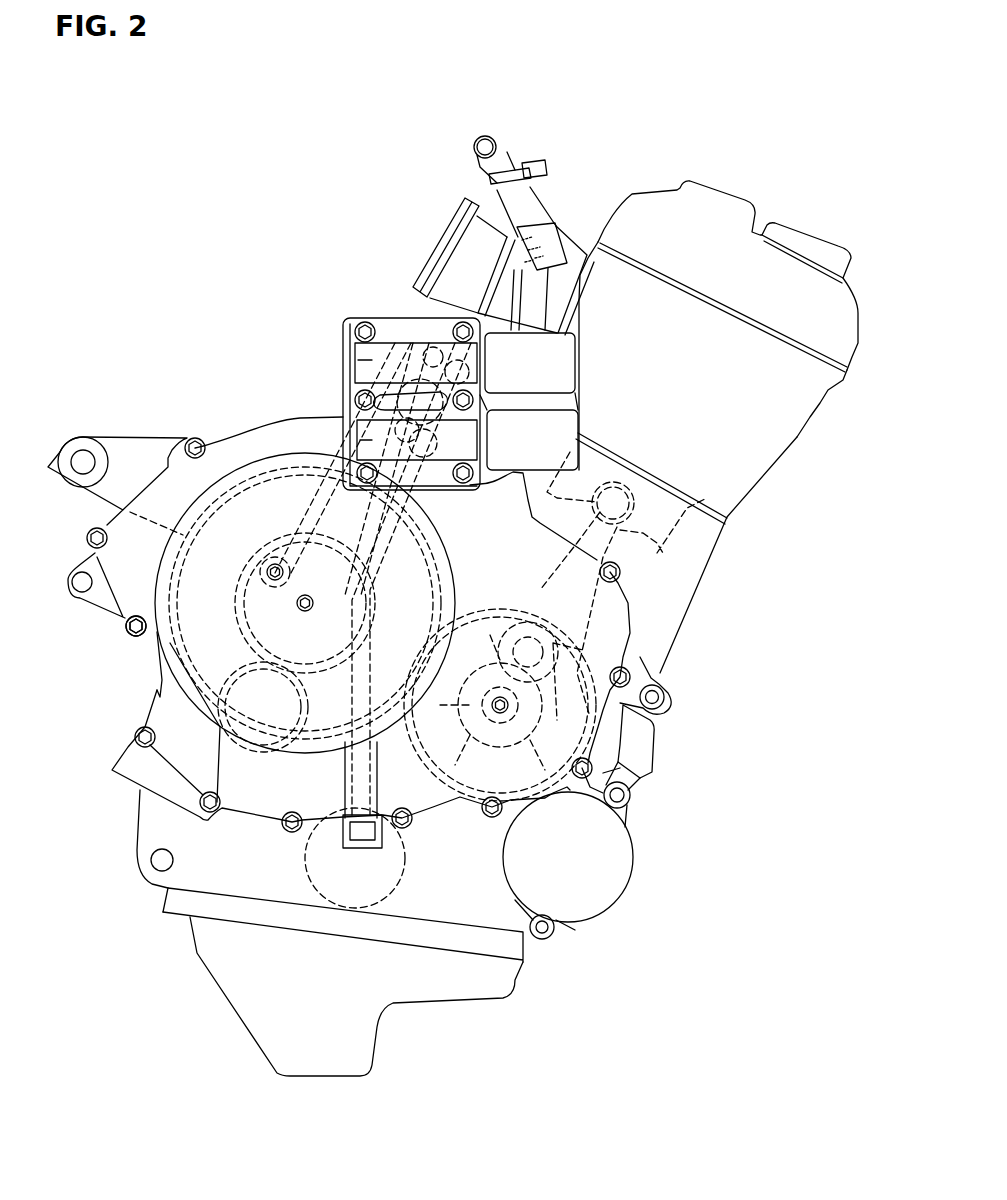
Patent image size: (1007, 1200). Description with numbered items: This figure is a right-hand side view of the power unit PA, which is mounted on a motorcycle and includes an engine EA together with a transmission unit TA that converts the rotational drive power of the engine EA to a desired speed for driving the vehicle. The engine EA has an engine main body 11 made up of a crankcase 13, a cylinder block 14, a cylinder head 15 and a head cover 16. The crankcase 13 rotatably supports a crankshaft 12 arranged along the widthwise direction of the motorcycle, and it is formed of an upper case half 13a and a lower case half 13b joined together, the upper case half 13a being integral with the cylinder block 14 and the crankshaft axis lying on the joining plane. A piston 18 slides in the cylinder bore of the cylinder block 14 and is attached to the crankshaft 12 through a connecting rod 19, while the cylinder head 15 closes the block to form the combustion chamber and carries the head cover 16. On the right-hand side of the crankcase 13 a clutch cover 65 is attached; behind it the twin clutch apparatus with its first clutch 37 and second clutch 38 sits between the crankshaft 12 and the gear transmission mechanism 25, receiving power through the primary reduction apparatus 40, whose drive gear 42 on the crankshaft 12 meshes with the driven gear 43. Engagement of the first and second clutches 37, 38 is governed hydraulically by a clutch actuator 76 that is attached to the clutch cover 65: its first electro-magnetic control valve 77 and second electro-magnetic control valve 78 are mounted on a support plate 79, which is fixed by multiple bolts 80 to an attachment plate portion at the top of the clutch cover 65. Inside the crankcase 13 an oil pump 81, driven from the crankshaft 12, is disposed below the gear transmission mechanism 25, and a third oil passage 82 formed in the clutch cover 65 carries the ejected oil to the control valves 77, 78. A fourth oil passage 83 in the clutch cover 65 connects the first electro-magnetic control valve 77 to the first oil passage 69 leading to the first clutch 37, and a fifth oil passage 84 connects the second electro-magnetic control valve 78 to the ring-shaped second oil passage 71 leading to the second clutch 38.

The engine main body 11 is at (483, 895).
The crankshaft 12 is at (458, 760).
The crankcase 13 is at (689, 766).
The upper case half 13a is at (622, 718).
The lower case half 13b is at (620, 778).
The cylinder block 14 is at (660, 622).
The cylinder head 15 is at (737, 460).
The head cover 16 is at (794, 288).
The piston 18 is at (670, 520).
The connecting rod 19 is at (640, 566).
The gear transmission mechanism 25 is at (318, 738).
The first clutch 37 is at (157, 632).
The second clutch 38 is at (157, 632).
The primary reduction apparatus 40 is at (205, 701).
The drive gear 42 is at (570, 797).
The driven gear 43 is at (157, 663).
The clutch cover 65 is at (163, 707).
The first oil passage 69 is at (262, 645).
The second oil passage 71 is at (245, 558).
The clutch actuator 76 is at (255, 302).
The first electro-magnetic control valve 77 is at (354, 432).
The second electro-magnetic control valve 78 is at (352, 363).
The support plate 79 is at (402, 330).
The bolts 80 is at (365, 323).
The oil pump 81 is at (383, 875).
The third oil passage 82 is at (440, 568).
The fourth oil passage 83 is at (329, 697).
The fifth oil passage 84 is at (302, 527).
The power unit PA is at (598, 131).
The transmission unit TA is at (258, 540).
The engine EA is at (662, 675).